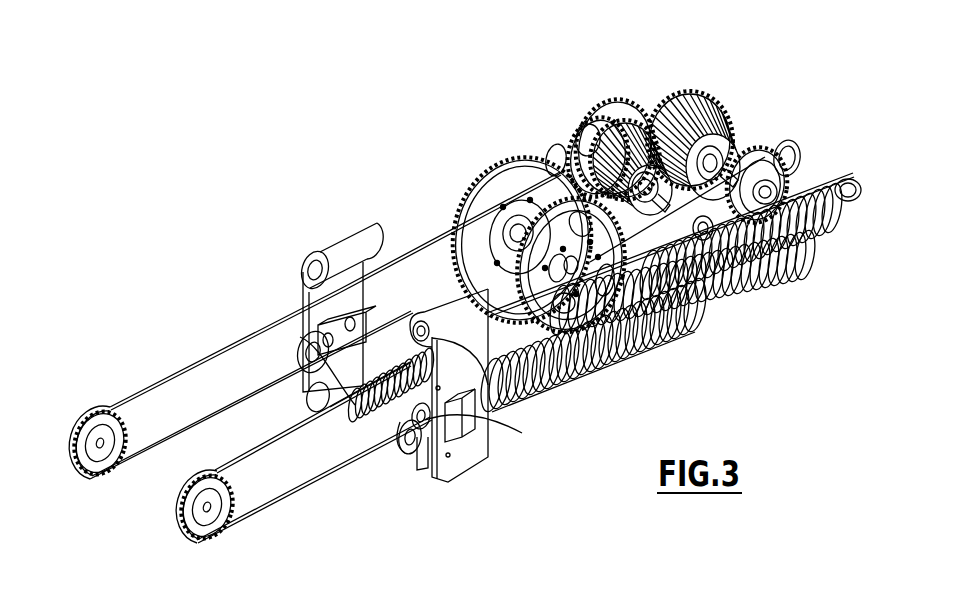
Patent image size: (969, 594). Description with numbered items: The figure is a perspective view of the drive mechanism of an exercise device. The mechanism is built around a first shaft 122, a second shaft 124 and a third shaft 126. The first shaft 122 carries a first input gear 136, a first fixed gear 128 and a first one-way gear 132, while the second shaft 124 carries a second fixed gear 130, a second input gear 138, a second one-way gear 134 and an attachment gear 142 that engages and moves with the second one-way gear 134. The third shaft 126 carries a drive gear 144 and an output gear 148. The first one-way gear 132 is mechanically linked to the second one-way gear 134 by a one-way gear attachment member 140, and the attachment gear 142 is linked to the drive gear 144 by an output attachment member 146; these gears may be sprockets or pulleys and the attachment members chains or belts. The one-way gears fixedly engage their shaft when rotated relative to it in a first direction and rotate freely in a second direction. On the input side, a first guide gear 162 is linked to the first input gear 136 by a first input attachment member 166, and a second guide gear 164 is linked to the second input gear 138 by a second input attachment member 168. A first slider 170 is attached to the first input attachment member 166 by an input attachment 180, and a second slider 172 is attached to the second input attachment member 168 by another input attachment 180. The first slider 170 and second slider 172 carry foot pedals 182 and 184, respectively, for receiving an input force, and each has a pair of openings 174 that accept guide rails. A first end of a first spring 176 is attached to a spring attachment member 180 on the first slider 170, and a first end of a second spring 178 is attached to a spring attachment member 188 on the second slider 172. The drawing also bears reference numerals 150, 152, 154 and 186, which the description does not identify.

The first shaft 122 is at (760, 137).
The second shaft 124 is at (700, 313).
The third shaft 126 is at (512, 203).
The first fixed gear 128 is at (723, 117).
The second fixed gear 130 is at (677, 102).
The first one-way gear 132 is at (680, 95).
The second one-way gear 134 is at (590, 143).
The first input gear 136 is at (805, 182).
The second input gear 138 is at (600, 133).
The one-way gear attachment member 140 is at (620, 110).
The attachment gear 142 is at (580, 127).
The drive gear 144 is at (497, 212).
The output attachment member 146 is at (557, 153).
The output gear 148 is at (483, 310).
The spring 150 is at (640, 110).
The spring 152 is at (747, 280).
The rail 154 is at (465, 222).
The first guide gear 162 is at (197, 520).
The second guide gear 164 is at (90, 457).
The first input attachment member 166 is at (257, 507).
The second input attachment member 168 is at (150, 380).
The first slider 170 is at (467, 463).
The second slider 172 is at (347, 283).
The pair of openings 174 is at (283, 330).
The first spring 176 is at (670, 330).
The second spring 178 is at (330, 440).
The input attachment 180 is at (320, 262).
The foot pedal 182 is at (457, 437).
The foot pedal 184 is at (300, 358).
The bearing 186 is at (410, 452).
The spring attachment member 188 is at (333, 390).